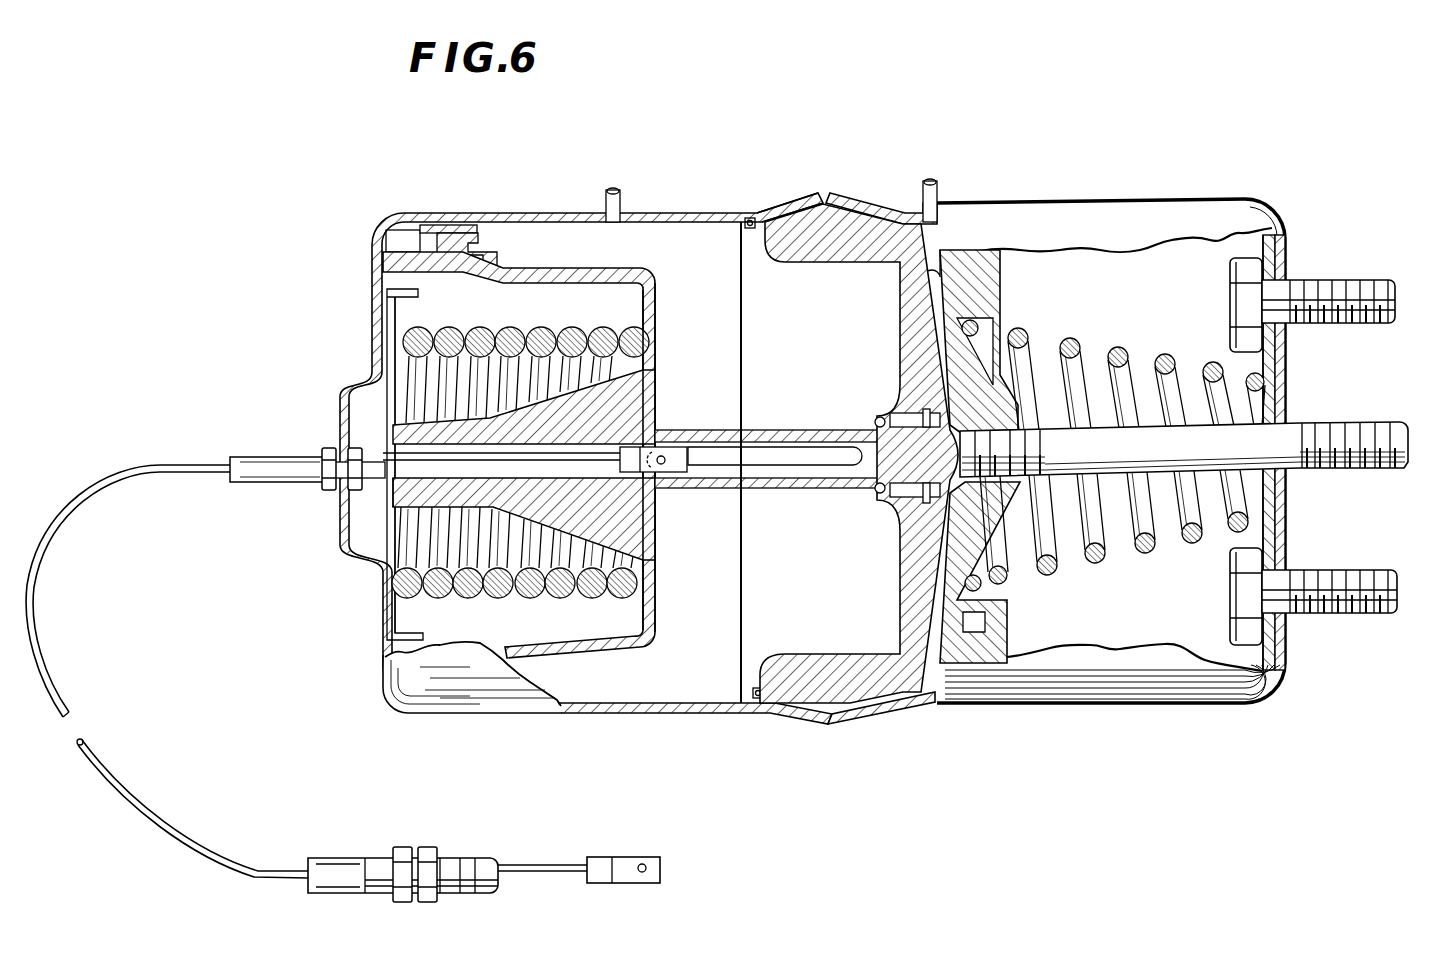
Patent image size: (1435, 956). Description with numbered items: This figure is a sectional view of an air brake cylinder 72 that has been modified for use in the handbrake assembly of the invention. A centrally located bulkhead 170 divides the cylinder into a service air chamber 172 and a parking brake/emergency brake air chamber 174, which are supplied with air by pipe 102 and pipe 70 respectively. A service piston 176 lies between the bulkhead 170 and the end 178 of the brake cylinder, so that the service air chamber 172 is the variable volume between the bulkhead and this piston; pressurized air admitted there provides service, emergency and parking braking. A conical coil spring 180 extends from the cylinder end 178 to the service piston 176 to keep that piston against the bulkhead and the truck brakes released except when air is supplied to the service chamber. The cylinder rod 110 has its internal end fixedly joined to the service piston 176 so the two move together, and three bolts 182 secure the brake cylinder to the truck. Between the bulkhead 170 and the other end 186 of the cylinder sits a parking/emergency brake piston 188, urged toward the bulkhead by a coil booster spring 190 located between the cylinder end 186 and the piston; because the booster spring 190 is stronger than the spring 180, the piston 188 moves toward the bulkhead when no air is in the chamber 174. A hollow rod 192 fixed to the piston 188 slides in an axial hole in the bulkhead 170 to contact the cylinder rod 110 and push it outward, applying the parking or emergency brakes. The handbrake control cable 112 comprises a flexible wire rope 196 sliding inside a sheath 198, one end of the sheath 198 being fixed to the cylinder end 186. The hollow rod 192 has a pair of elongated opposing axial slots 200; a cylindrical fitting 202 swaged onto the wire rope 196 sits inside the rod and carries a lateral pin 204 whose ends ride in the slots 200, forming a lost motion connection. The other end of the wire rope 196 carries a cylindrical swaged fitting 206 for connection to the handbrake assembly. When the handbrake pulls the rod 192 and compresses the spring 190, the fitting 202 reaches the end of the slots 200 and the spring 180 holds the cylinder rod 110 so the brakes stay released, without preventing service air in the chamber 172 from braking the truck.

The pipe 70 is at (608, 198).
The brake cylinder 72 is at (712, 166).
The pipe 102 is at (938, 188).
The cylinder rod 110 is at (1338, 469).
The handbrake control cable 112 is at (55, 656).
The bulkhead 170 is at (906, 326).
The service air chamber 172 is at (932, 240).
The parking brake/emergency brake air chamber 174 is at (768, 636).
The service piston 176 is at (972, 372).
The end of the brake cylinder 178 is at (1290, 638).
The conical coil spring 180 is at (1103, 548).
The bolts 182 is at (1322, 292).
The end of the brake cylinder 186 is at (372, 286).
The parking/emergency brake piston 188 is at (594, 282).
The coil booster spring 190 is at (507, 588).
The hollow rod 192 is at (772, 489).
The flexible cable or wire rope 196 is at (617, 442).
The sheath 198 is at (150, 815).
The axial slots 200 is at (823, 466).
The cylindrical fitting 202 is at (650, 494).
The lateral pin 204 is at (668, 472).
The cylindrical swaged fitting 206 is at (627, 855).